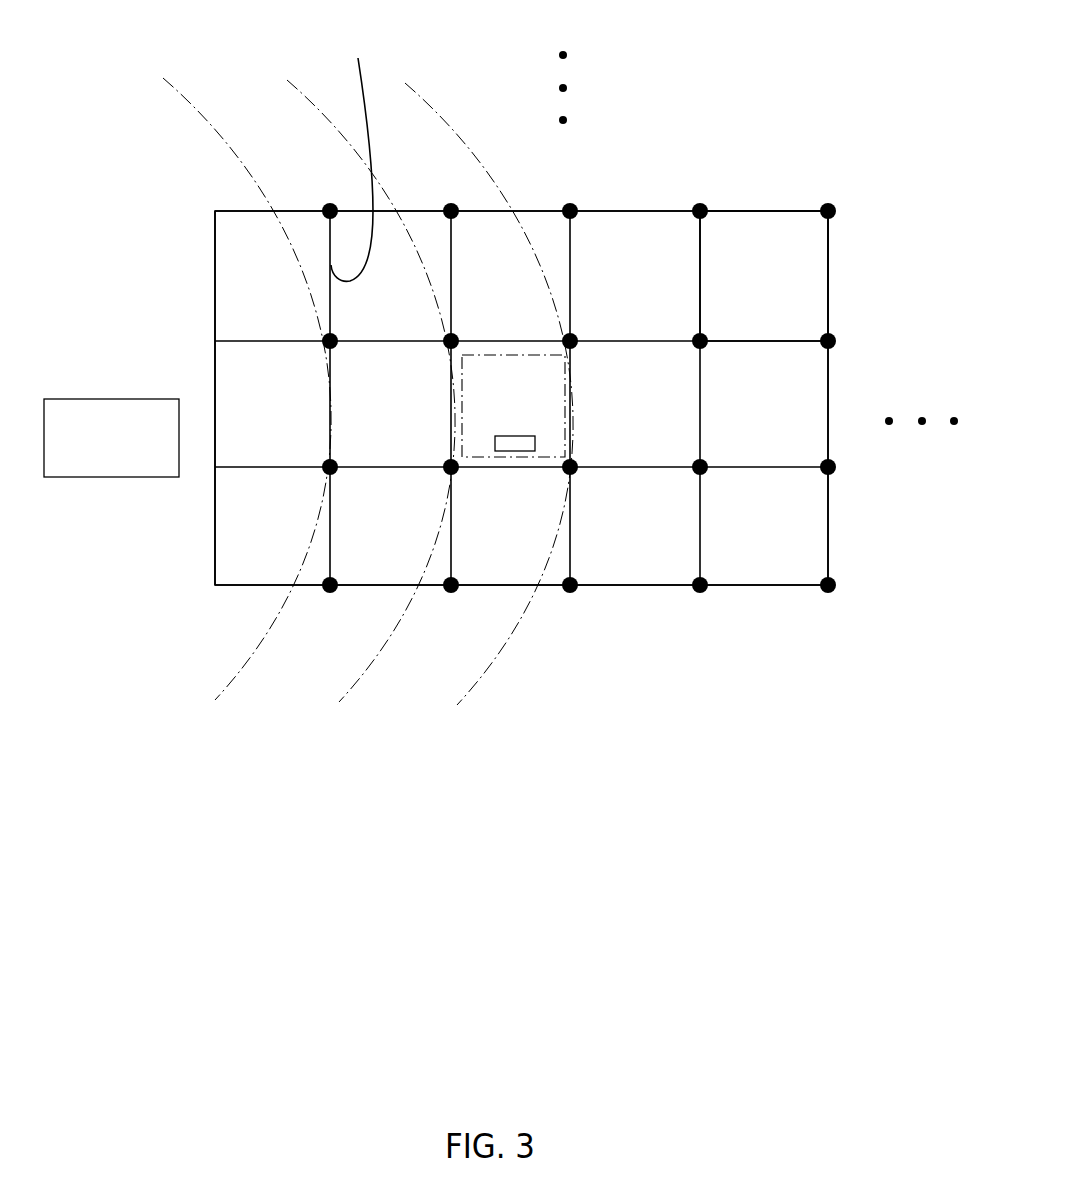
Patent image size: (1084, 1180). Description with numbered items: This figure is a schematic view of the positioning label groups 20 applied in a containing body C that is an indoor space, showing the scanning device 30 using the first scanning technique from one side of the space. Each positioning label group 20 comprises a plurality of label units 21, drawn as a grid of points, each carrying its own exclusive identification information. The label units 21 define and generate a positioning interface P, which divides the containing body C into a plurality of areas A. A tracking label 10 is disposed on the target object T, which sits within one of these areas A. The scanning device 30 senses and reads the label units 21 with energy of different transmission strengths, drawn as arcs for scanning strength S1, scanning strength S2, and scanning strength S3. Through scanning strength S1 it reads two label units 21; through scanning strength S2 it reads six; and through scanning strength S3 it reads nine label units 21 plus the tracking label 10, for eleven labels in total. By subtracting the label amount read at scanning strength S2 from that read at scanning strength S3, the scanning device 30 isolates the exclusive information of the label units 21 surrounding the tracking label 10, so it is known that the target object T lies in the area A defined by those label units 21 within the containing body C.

The tracking label 10 is at (512, 450).
The positioning label group 20 is at (148, 183).
The label unit 21 is at (330, 211).
The scanning device 30 is at (97, 399).
The area A is at (262, 508).
The containing body C is at (800, 270).
The positioning interface P is at (352, 155).
The target object T is at (524, 356).
The scanning strength S1 is at (237, 677).
The scanning strength S2 is at (378, 668).
The scanning strength S3 is at (502, 660).